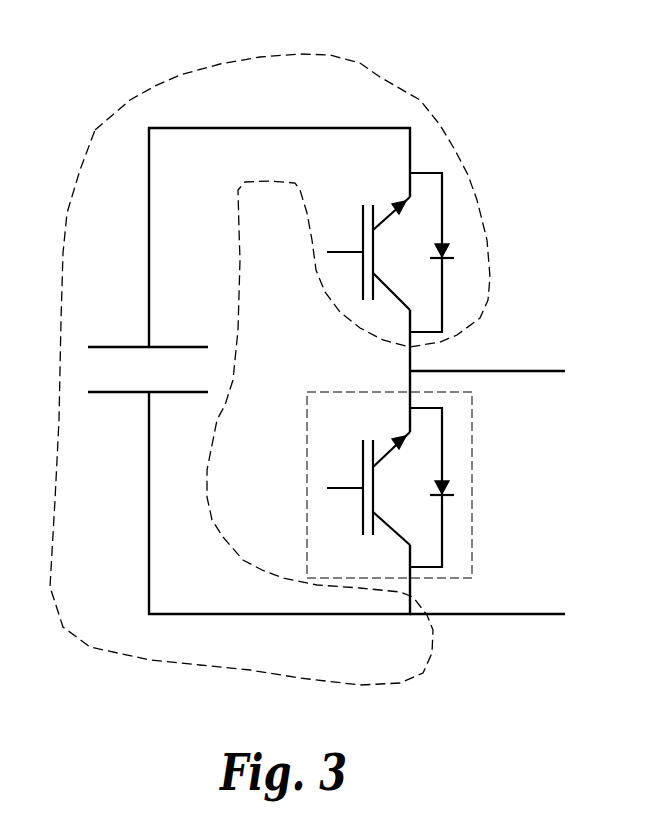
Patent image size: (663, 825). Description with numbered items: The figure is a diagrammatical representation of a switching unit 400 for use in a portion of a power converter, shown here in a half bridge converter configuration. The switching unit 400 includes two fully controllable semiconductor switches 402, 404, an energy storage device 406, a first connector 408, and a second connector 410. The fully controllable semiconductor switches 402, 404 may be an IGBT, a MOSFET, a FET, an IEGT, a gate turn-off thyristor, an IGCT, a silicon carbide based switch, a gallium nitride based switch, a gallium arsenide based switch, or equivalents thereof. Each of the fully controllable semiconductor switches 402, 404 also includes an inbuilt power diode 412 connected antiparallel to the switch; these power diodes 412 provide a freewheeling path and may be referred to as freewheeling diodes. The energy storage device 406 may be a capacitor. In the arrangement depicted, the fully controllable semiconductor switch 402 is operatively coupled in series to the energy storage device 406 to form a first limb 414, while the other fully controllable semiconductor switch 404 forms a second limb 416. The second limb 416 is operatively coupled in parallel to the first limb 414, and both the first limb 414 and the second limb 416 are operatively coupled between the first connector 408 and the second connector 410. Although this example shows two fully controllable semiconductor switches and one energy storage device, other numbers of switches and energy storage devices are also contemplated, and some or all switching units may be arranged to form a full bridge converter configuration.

The switching unit 400 is at (471, 62).
The fully controllable semiconductor switch 402 is at (363, 231).
The fully controllable semiconductor switch 404 is at (363, 451).
The energy storage device 406 is at (118, 346).
The first connector 408 is at (512, 369).
The second connector 410 is at (531, 615).
The power diode 412 is at (444, 251).
The first limb 414 is at (95, 131).
The second limb 416 is at (474, 434).